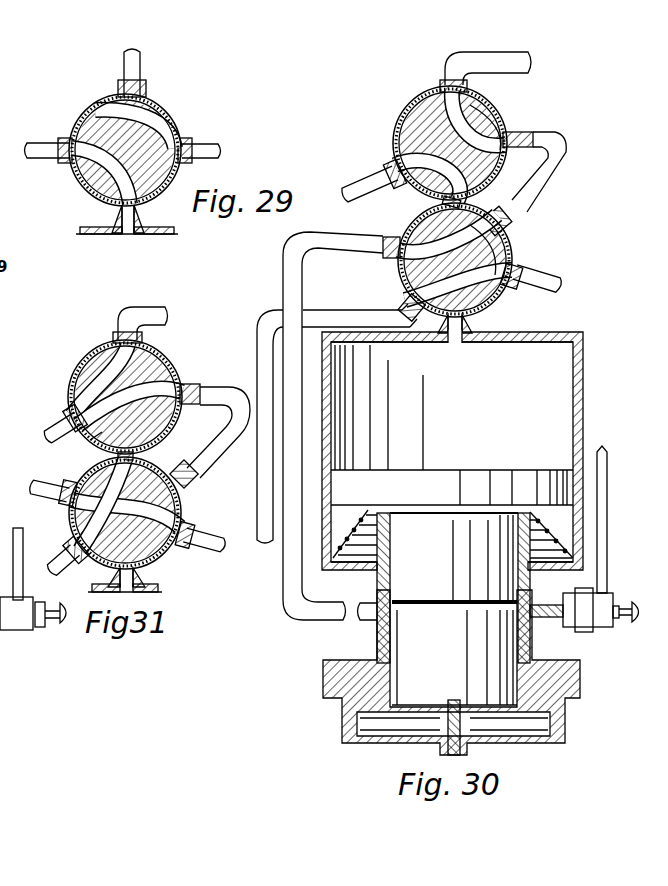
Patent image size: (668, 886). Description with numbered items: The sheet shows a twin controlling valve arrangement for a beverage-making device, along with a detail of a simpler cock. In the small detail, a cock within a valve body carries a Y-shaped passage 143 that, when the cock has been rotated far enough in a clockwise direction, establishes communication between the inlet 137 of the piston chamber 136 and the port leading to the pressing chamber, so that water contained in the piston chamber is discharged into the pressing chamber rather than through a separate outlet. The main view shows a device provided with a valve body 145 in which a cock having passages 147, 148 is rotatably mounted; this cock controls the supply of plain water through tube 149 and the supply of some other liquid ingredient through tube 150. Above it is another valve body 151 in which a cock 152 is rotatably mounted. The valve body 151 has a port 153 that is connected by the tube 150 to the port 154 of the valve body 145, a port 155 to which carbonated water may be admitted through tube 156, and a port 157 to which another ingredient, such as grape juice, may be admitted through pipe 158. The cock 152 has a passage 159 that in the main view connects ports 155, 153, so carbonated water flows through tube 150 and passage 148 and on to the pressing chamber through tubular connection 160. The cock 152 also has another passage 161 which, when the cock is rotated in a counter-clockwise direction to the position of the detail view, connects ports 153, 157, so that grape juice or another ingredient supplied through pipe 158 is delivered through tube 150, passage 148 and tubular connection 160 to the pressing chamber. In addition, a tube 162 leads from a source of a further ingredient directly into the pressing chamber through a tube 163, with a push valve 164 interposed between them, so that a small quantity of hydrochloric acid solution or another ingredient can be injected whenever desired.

In FIG. 29, the piston chamber 136 is at (62, 140).
In FIG. 29, the inlet 137 is at (137, 217).
In FIG. 29, the Y-shaped passage 143 is at (112, 204).
In FIG. 30, the valve body 145 is at (515, 248).
In FIG. 30, the passage 147 is at (487, 308).
In FIG. 31, the passage 148 is at (148, 494).
In FIG. 30, the tube 149 is at (538, 283).
In FIG. 31, the tube 150 is at (197, 460).
In FIG. 30, the tube 150 is at (547, 180).
In FIG. 30, the valve body 151 is at (497, 106).
In FIG. 31, the cock 152 is at (163, 414).
In FIG. 30, the cock 152 is at (427, 118).
In FIG. 30, the port 153 is at (520, 134).
In FIG. 30, the port 154 is at (512, 233).
In FIG. 30, the port 155 is at (465, 84).
In FIG. 30, the tube 156 is at (497, 47).
In FIG. 30, the port 157 is at (390, 158).
In FIG. 31, the pipe 158 is at (62, 426).
In FIG. 30, the pipe 158 is at (365, 183).
In FIG. 30, the passage 159 is at (503, 123).
In FIG. 30, the tubular connection 160 is at (292, 548).
In FIG. 31, the passage 161 is at (92, 440).
In FIG. 30, the passage 161 is at (425, 188).
In FIG. 30, the tube 162 is at (603, 539).
In FIG. 30, the tube 163 is at (546, 620).
In FIG. 30, the push valve 164 is at (596, 620).